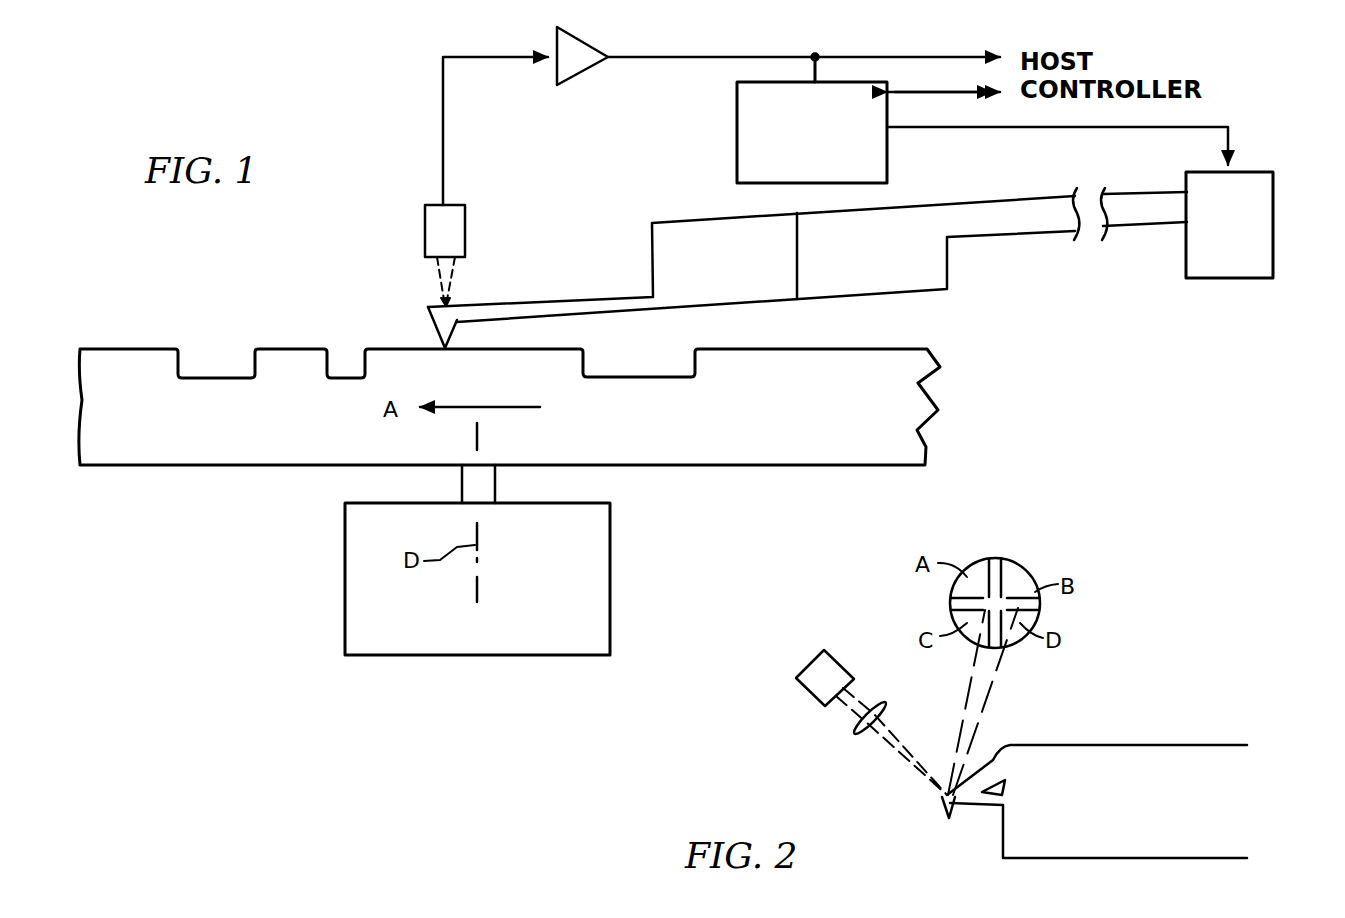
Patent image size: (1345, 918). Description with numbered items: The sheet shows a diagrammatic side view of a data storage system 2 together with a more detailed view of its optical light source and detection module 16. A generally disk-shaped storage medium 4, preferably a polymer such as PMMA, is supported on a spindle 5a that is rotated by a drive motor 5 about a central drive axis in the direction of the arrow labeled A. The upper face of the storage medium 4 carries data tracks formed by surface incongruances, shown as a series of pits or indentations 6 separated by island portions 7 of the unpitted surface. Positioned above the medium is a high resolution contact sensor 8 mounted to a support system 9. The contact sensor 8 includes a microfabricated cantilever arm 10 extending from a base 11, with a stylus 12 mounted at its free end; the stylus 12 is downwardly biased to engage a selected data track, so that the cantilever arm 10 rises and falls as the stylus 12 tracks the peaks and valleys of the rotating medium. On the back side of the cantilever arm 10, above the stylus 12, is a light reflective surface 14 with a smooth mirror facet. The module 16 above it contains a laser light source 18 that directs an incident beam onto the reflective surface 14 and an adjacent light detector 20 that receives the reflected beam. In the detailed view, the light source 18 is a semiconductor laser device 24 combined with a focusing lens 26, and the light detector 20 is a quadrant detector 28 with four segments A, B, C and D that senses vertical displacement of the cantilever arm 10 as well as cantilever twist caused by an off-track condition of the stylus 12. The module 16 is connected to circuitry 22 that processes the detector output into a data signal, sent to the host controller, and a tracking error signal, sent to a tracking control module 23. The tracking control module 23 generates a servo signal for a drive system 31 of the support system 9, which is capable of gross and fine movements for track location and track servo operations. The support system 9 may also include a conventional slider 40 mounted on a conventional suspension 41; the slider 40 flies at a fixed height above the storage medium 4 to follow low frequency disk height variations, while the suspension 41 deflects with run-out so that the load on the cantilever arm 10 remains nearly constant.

In FIG. 1, the data storage system 2 is at (112, 279).
In FIG. 1, the storage medium 4 is at (813, 452).
In FIG. 1, the drive motor 5 is at (587, 562).
In FIG. 1, the spindle 5a is at (497, 487).
In FIG. 1, the pits or indentations 6 is at (213, 377).
In FIG. 1, the island portions 7 is at (290, 349).
In FIG. 1, the contact sensor 8 is at (620, 233).
In FIG. 2, the contact sensor 8 is at (1105, 757).
In FIG. 1, the support system 9 is at (978, 272).
In FIG. 1, the cantilever arm 10 is at (533, 308).
In FIG. 2, the cantilever arm 10 is at (982, 828).
In FIG. 1, the base 11 is at (675, 230).
In FIG. 1, the stylus 12 is at (448, 340).
In FIG. 2, the stylus 12 is at (947, 810).
In FIG. 1, the light reflective surface 14 is at (428, 305).
In FIG. 2, the light reflective surface 14 is at (940, 796).
In FIG. 1, the optical light source and detection module 16 is at (425, 214).
In FIG. 1, the laser light source 18 is at (425, 260).
In FIG. 1, the light detector 20 is at (465, 261).
In FIG. 1, the circuitry 22 is at (585, 70).
In FIG. 1, the tracking control module 23 is at (737, 103).
In FIG. 2, the semiconductor laser device 24 is at (808, 693).
In FIG. 2, the focusing lens 26 is at (863, 735).
In FIG. 2, the quadrant detector 28 is at (1020, 578).
In FIG. 1, the drive system 31 is at (1273, 220).
In FIG. 1, the slider 40 is at (855, 232).
In FIG. 1, the suspension 41 is at (1017, 217).